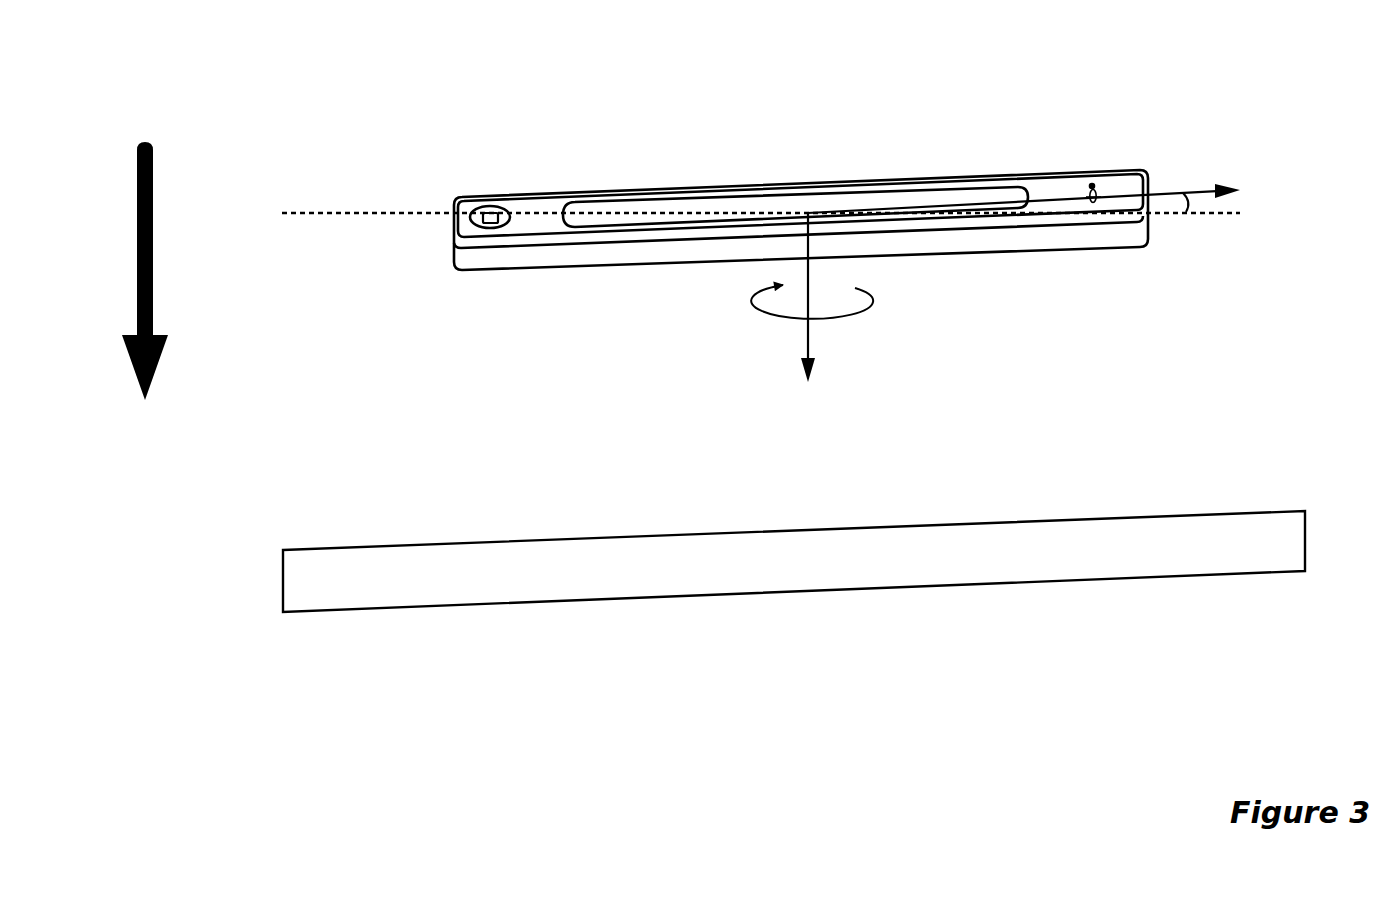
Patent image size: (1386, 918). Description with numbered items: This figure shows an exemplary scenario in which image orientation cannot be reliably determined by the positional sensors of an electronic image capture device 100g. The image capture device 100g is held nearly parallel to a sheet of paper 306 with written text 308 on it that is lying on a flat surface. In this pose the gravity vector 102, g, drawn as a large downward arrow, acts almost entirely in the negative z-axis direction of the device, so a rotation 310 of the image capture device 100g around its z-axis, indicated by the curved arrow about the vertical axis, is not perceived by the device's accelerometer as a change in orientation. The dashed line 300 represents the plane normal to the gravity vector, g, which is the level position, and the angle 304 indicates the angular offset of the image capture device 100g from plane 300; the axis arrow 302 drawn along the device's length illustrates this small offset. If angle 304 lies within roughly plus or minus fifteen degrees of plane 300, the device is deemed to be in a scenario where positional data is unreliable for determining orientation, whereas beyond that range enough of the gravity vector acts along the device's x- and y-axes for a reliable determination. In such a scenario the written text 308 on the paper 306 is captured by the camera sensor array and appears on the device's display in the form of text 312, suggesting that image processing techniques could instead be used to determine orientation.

The gravity vector 102 is at (152, 130).
The normal plane to the gravity vector 300 is at (328, 185).
The image capture device 100g is at (533, 163).
The text displayed on the device's display 312 is at (740, 178).
The longitudinal axis of device 302 is at (1155, 168).
The angle 304 is at (1210, 226).
The rotation 310 is at (768, 318).
The sheet of paper 306 is at (393, 518).
The written text 308 is at (747, 530).